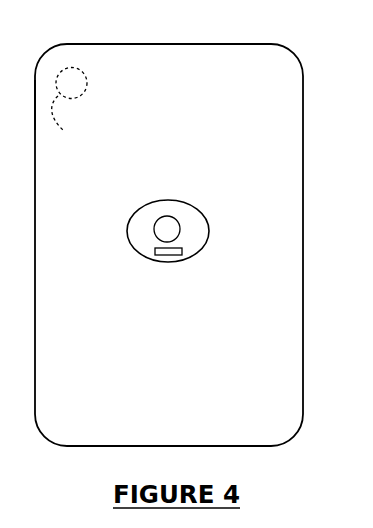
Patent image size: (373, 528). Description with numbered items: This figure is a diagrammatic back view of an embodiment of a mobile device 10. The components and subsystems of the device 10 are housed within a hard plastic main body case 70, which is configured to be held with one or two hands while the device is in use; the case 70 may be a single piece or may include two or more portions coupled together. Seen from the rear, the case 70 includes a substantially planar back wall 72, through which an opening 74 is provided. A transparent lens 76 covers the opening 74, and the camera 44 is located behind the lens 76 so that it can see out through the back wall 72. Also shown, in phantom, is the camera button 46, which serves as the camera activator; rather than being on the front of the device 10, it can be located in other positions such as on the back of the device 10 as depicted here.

The mobile device 10 is at (34, 105).
The camera 44 is at (184, 232).
The camera button 46 is at (69, 113).
The main body case 70 is at (192, 43).
The back wall 72 is at (135, 73).
The opening 74 is at (188, 204).
The transparent lens 76 is at (142, 231).